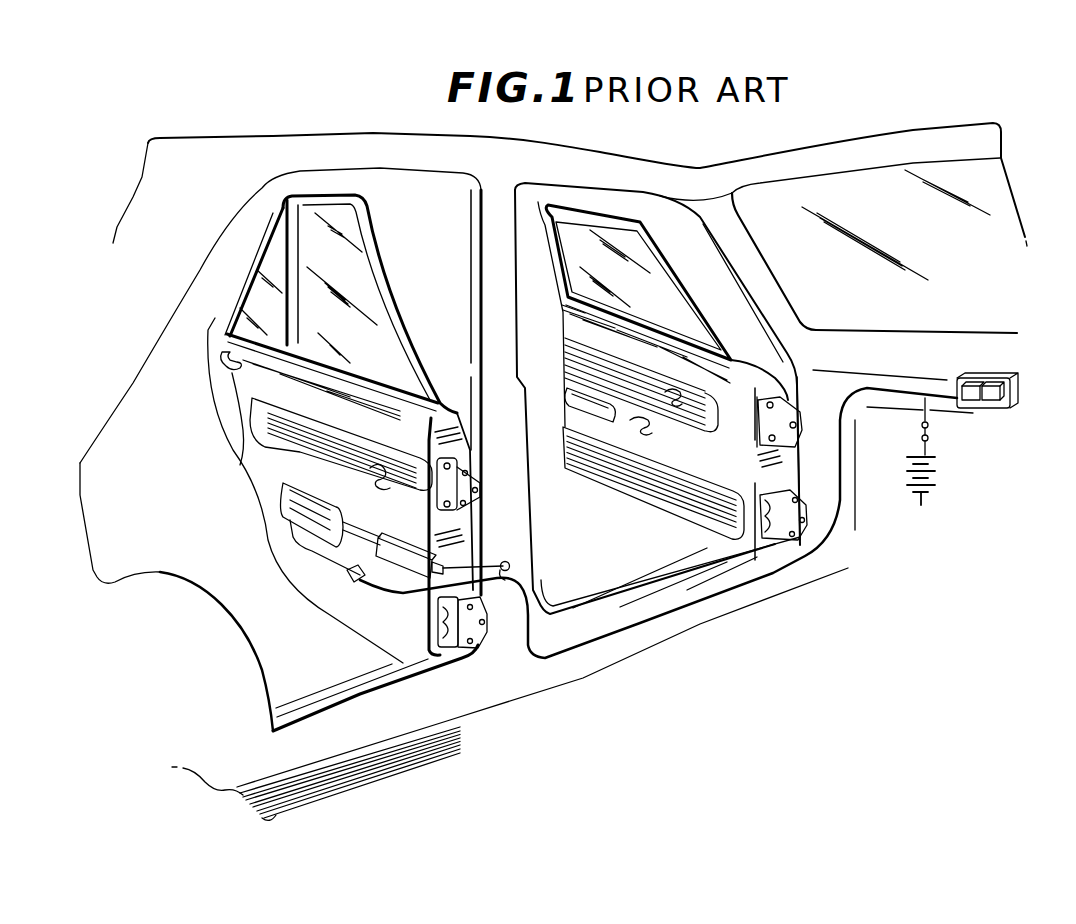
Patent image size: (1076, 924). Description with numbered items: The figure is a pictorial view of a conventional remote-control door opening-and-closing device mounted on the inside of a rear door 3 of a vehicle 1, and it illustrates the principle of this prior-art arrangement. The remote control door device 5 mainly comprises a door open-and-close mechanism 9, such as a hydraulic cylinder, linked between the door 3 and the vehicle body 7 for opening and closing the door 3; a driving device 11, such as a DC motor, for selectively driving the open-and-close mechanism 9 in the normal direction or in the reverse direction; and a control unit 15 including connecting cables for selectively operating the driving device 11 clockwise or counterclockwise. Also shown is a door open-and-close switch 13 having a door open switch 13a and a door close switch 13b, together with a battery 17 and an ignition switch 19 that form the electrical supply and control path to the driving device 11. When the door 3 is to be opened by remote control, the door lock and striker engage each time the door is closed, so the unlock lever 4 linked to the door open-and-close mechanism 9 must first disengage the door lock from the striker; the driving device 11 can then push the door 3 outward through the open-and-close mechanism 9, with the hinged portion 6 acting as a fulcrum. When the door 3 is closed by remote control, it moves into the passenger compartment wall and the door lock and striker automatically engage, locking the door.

The vehicle 1 is at (208, 130).
The rear door 3 is at (240, 388).
The unlock lever 4 is at (221, 352).
The remote control door device 5 is at (287, 602).
The hinged portion 6 is at (463, 652).
The vehicle body 7 is at (507, 673).
The door open-and-close mechanism 9 is at (397, 573).
The driving device 11 is at (293, 503).
The door open-and-close switch 13 is at (1016, 393).
The door open switch 13a is at (967, 387).
The door close switch 13b is at (990, 400).
The control unit 15 is at (640, 638).
The battery 17 is at (940, 477).
The ignition switch 19 is at (928, 430).